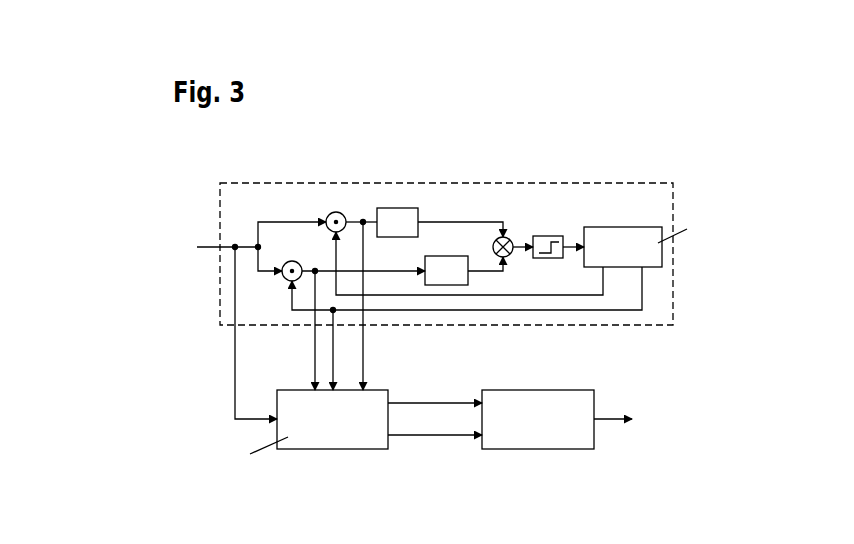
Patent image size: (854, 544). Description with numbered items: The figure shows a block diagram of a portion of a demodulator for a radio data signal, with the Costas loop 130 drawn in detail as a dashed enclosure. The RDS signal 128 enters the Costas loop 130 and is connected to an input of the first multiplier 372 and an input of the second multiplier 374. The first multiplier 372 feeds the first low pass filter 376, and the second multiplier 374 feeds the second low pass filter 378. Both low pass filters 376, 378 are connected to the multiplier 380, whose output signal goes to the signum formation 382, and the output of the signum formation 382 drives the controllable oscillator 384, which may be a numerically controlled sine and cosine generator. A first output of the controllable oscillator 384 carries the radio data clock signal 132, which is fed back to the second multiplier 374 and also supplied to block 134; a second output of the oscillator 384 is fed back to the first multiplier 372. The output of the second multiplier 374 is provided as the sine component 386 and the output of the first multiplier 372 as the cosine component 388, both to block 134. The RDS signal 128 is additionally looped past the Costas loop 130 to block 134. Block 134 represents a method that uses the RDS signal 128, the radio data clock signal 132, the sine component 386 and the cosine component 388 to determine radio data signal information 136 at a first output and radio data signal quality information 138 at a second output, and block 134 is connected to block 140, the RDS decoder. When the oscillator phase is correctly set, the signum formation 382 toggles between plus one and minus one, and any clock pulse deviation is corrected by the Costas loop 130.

The Costas loop 130 is at (673, 193).
The radio data signal 128 is at (236, 290).
The first multiplier 372 is at (336, 212).
The second multiplier 374 is at (290, 261).
The first low pass filter 376 is at (380, 208).
The second low pass filter 378 is at (455, 256).
The multiplier 380 is at (507, 237).
The signum formation 382 is at (548, 236).
The controllable oscillator 384 is at (636, 227).
The sine component 386 is at (313, 362).
The cosine component 388 is at (364, 338).
The radio data clock signal 132 is at (334, 365).
The block 134 is at (332, 449).
The radio data signal information 136 is at (443, 403).
The radio data signal quality information 138 is at (398, 435).
The block 140 is at (538, 449).